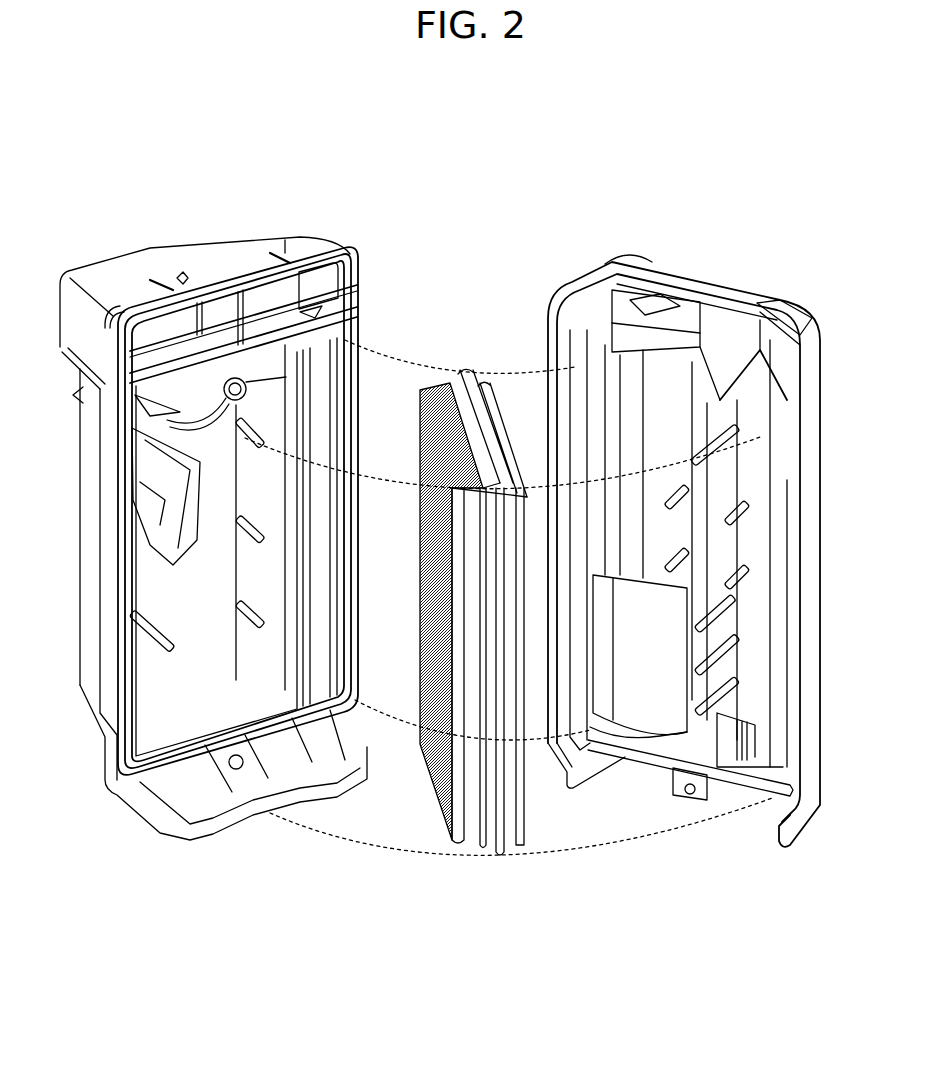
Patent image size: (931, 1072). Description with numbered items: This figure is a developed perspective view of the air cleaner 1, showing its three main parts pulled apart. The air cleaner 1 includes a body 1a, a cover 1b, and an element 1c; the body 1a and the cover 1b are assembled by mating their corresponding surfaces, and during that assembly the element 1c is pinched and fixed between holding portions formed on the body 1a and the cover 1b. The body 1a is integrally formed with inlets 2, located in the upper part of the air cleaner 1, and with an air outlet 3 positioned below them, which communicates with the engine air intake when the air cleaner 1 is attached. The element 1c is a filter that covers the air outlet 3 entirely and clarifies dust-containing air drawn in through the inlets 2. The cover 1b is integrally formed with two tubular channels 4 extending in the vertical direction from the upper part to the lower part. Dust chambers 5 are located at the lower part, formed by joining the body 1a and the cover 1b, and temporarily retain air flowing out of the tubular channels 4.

The air cleaner 1 is at (514, 122).
The body 1a is at (360, 228).
The cover 1b is at (567, 245).
The element 1c is at (451, 342).
The inlets 2 is at (167, 283).
The air outlet 3 is at (258, 430).
The tubular channels 4 is at (655, 333).
The dust chambers 5 is at (194, 808).